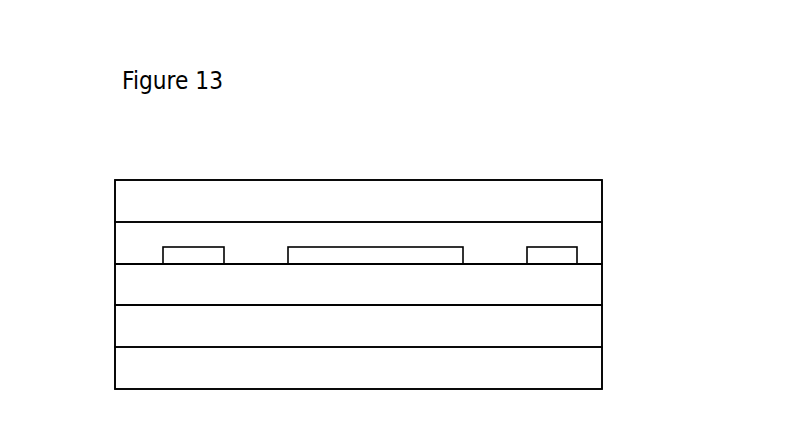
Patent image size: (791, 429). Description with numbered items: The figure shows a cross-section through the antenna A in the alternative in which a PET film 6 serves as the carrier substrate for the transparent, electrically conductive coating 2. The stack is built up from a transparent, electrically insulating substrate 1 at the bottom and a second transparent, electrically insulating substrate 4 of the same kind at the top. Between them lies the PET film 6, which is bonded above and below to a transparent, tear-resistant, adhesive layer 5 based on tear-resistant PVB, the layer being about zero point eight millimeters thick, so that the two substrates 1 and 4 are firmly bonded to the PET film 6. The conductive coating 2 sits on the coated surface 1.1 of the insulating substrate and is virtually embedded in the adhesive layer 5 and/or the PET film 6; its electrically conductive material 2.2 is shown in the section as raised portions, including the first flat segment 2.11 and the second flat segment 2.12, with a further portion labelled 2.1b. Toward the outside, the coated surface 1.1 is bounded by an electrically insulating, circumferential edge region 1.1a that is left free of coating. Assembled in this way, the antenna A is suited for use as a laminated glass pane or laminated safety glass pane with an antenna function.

The antenna A is at (500, 111).
The transparent, electrically insulating substrate 1 is at (637, 373).
The coated surface of the transparent, electrically insulating substrate 1.1 is at (332, 284).
The electrically insulating, circumferential edge region 1.1a is at (132, 256).
The transparent, electrically conductive coating 2 is at (207, 242).
The electrically conductive material 2.2 is at (534, 245).
The flat segment or divided flat segment where n equals two 2.12 is at (184, 272).
The flat segment where n equals one 2.11 is at (386, 266).
The electrode contact 2.1b is at (551, 267).
The second transparent, electrically insulating substrate 4 is at (576, 180).
The transparent, tear-resistant, adhesive layer 5 is at (627, 239).
The PET film as a carrier substrate for the conductive coating 6 is at (627, 289).